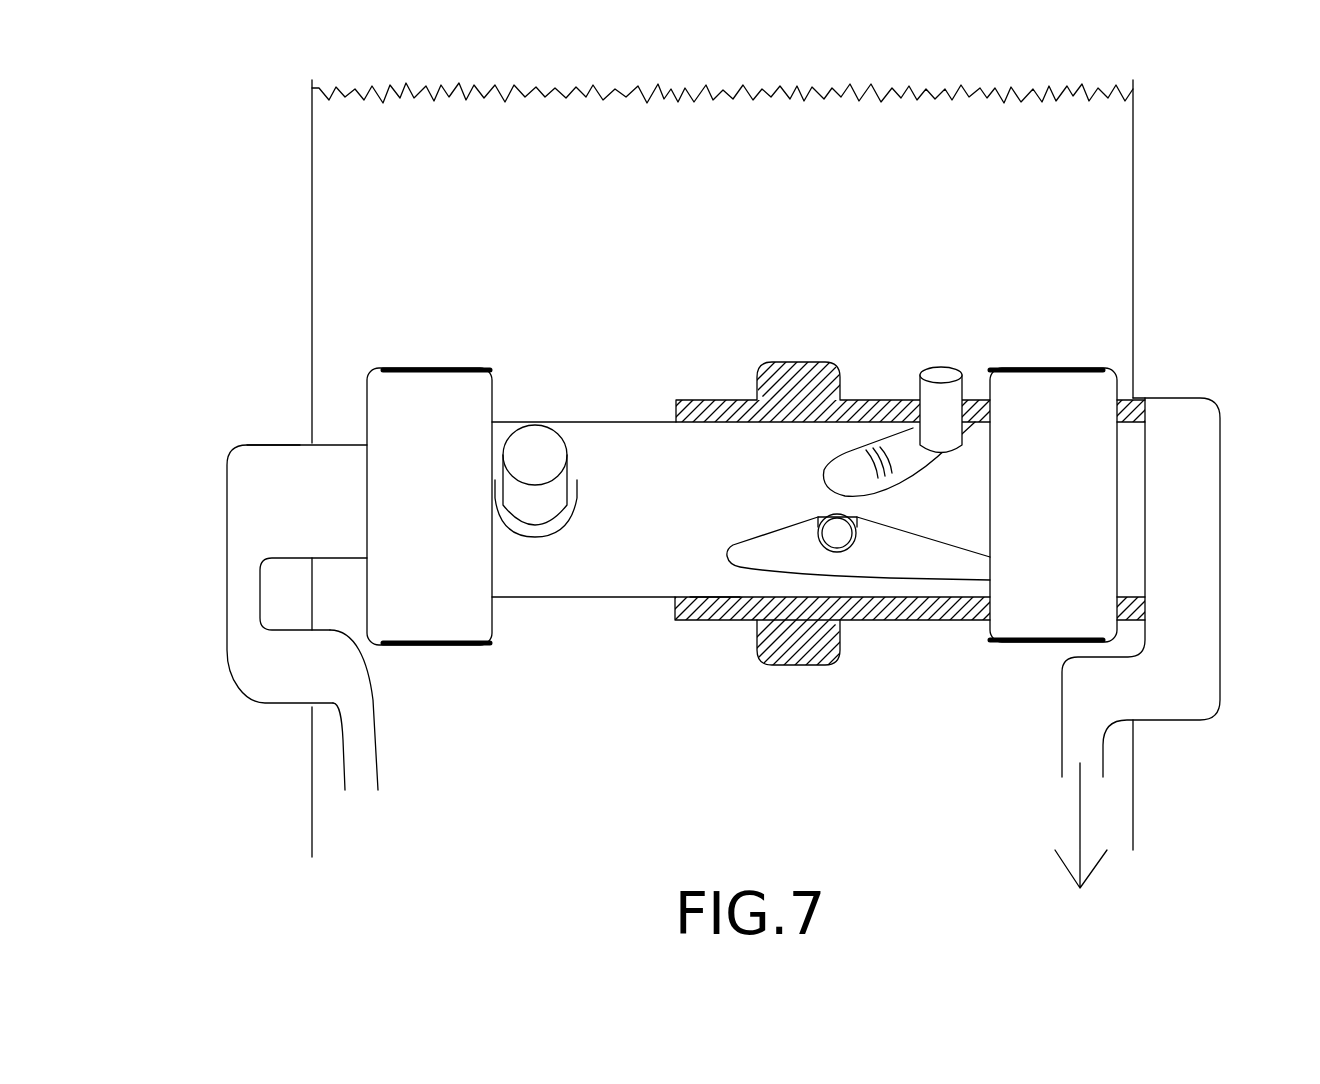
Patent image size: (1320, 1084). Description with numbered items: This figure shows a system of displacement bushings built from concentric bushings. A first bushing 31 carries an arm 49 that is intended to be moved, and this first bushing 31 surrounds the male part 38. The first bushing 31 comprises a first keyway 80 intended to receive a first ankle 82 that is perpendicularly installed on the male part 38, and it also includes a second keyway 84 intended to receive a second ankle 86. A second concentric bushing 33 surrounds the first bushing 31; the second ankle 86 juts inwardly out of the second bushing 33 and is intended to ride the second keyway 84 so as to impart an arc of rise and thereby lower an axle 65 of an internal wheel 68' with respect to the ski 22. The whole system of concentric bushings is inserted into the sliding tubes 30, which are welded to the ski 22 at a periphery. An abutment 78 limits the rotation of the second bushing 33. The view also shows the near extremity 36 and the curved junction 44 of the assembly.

The ski 22 is at (350, 142).
The sliding tubes 30 is at (415, 417).
The first bushing 31 is at (643, 460).
The second concentric bushing 33 is at (733, 405).
The near extremity 36 is at (227, 507).
The male part 38 is at (258, 450).
The curved junction 44 is at (245, 693).
The arm 49 is at (535, 455).
The axle 65 is at (1193, 617).
The internal wheel 68' is at (1088, 853).
The abutment 78 is at (792, 650).
The first keyway 80 is at (778, 560).
The first ankle 82 is at (837, 533).
The second keyway 84 is at (848, 482).
The second ankle 86 is at (940, 400).